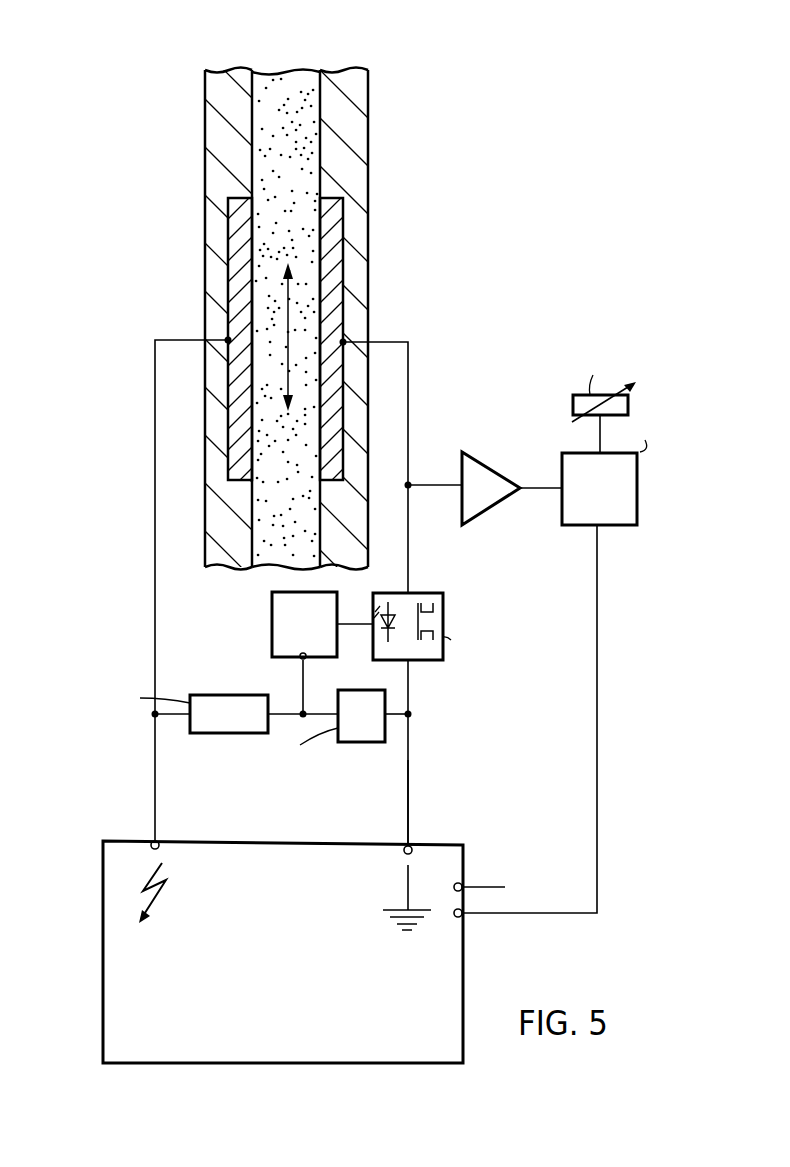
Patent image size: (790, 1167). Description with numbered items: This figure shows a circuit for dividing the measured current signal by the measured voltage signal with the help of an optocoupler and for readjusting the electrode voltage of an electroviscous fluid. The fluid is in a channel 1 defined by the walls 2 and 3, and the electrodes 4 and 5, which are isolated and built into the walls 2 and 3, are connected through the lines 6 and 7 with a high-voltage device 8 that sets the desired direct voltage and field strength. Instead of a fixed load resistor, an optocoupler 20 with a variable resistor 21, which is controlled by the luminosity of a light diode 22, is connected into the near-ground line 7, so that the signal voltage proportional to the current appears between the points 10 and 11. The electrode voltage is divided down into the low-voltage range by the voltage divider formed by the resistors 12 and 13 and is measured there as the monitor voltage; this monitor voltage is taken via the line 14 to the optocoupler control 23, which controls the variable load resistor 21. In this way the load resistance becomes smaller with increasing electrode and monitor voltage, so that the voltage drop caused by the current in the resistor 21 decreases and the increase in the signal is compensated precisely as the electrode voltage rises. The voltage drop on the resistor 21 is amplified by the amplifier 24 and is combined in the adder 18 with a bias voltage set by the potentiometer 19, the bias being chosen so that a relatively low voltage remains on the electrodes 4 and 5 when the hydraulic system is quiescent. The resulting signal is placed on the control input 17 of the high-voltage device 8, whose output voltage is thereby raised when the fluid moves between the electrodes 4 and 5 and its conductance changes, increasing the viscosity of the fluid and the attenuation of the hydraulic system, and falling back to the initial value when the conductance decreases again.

The channel 1 is at (283, 82).
The wall 2 is at (227, 77).
The wall 3 is at (336, 83).
The electrode 4 is at (236, 210).
The electrode 5 is at (333, 212).
The line 6 is at (155, 380).
The line 7 is at (410, 383).
The high-voltage device 8 is at (292, 850).
The point 10 is at (432, 485).
The point 11 is at (409, 792).
The resistor of the voltage divider 12 is at (233, 705).
The resistor of the voltage divider 13 is at (355, 730).
The line 14 is at (303, 686).
The control input 17 is at (513, 913).
The adder 18 is at (582, 512).
The potentiometer 19 is at (573, 400).
The optocoupler 20 is at (430, 593).
The variable resistor 21 is at (423, 622).
The light diode 22 is at (382, 617).
The optocoupler control 23 is at (150, 630).
The amplifier 24 is at (487, 480).